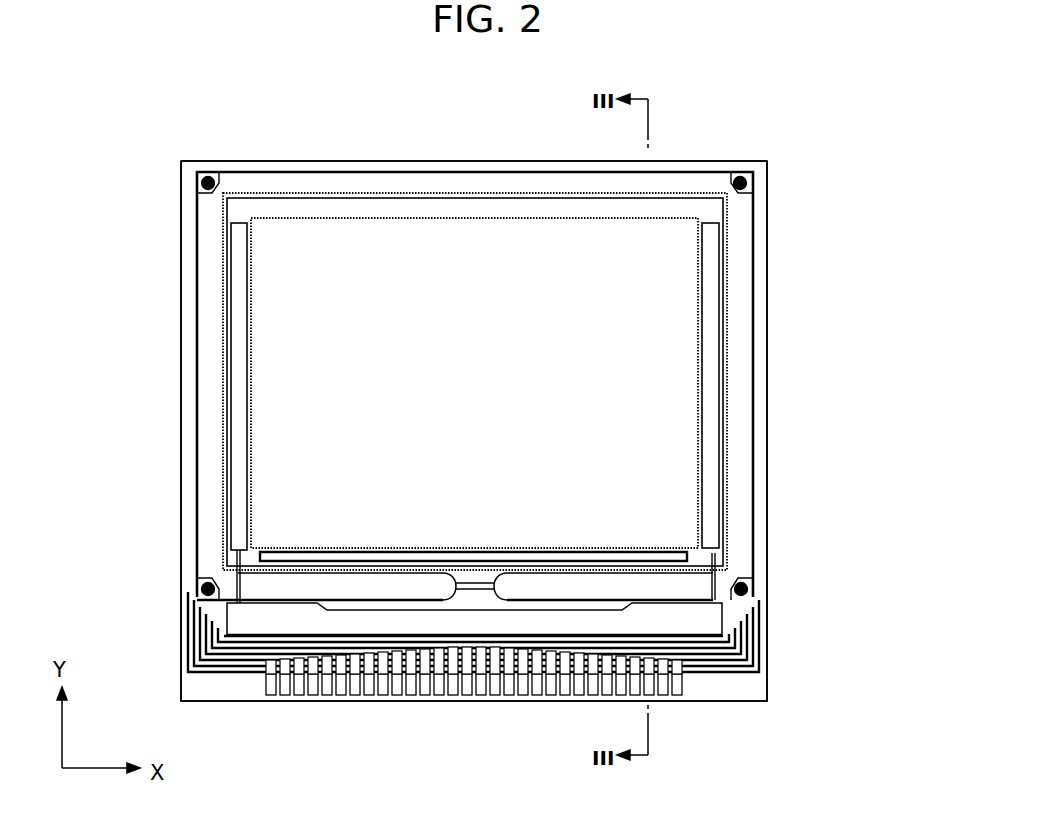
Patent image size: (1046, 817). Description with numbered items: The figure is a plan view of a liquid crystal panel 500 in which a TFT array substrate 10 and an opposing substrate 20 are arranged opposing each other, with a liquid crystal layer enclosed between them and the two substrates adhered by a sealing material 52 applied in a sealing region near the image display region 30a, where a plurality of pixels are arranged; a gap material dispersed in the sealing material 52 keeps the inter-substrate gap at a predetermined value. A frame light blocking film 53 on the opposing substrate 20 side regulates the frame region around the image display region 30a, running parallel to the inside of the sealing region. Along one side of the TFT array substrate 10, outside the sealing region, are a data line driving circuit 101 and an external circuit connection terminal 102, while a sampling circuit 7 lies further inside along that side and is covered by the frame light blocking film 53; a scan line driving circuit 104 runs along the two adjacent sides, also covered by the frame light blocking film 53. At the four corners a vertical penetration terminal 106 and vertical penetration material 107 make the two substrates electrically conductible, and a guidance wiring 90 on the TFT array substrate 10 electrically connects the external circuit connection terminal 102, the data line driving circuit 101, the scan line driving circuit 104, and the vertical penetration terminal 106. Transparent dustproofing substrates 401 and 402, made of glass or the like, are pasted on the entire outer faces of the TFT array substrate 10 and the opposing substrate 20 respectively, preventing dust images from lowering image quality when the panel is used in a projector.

The liquid crystal panel 500 is at (700, 62).
The dustproofing substrate 402 is at (300, 160).
The dustproofing substrate 401 is at (182, 448).
The TFT array substrate 10 is at (188, 260).
The sealing material 52 is at (740, 347).
The image display region 30a is at (293, 340).
The opposing substrate 20 is at (228, 388).
The scan line driving circuit 104 is at (712, 387).
The sampling circuit 7 is at (622, 560).
The frame light blocking film 53 is at (717, 553).
The vertical penetration terminal 106 is at (745, 213).
The vertical penetration material 107 is at (753, 592).
The guidance wiring 90 is at (183, 650).
The data line driving circuit 101 is at (250, 628).
The external circuit connection terminal 102 is at (445, 683).